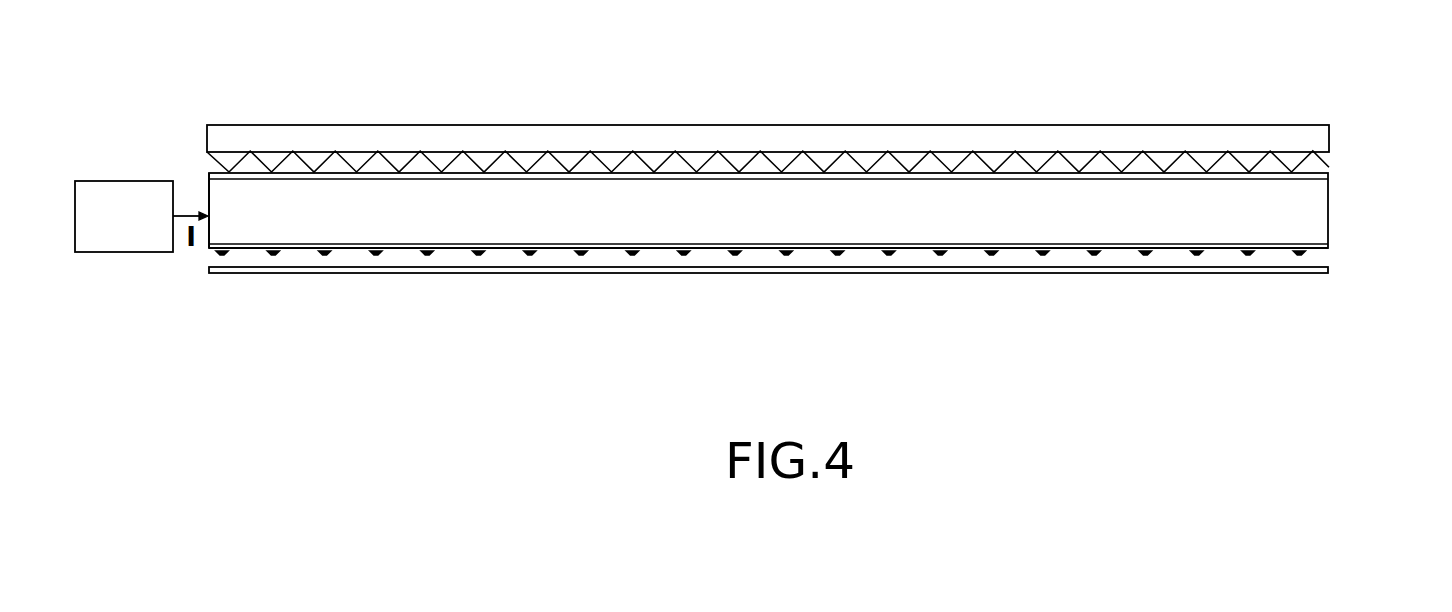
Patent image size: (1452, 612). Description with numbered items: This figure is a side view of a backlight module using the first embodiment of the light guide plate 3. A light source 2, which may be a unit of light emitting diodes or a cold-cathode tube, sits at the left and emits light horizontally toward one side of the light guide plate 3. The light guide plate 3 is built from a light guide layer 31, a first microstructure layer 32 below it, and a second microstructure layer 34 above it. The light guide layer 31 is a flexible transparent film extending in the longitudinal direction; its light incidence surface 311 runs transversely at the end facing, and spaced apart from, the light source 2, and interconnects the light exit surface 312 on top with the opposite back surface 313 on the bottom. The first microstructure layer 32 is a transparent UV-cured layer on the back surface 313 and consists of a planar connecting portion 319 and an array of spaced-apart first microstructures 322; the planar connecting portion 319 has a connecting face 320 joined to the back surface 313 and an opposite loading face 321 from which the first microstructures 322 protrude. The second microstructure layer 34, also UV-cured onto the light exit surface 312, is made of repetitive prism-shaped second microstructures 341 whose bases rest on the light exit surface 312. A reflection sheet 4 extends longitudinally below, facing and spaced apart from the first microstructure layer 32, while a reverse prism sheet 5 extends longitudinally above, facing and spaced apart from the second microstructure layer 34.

The light source 2 is at (107, 180).
The light guide plate 3 is at (1338, 162).
The reflection sheet 4 is at (352, 272).
The prism sheet 5 is at (362, 125).
The light guide layer 31 is at (799, 216).
The light incidence surface 311 is at (208, 203).
The light exit surface 312 is at (1308, 181).
The back surface 313 is at (1320, 244).
The planar connecting portion 319 is at (1182, 247).
The first microstructure layer 32 is at (821, 312).
The connecting face 320 is at (821, 296).
The loading face 321 is at (791, 297).
The first microstructures 322 is at (223, 253).
The second microstructure layer 34 is at (768, 94).
The second microstructures 341 is at (1282, 178).